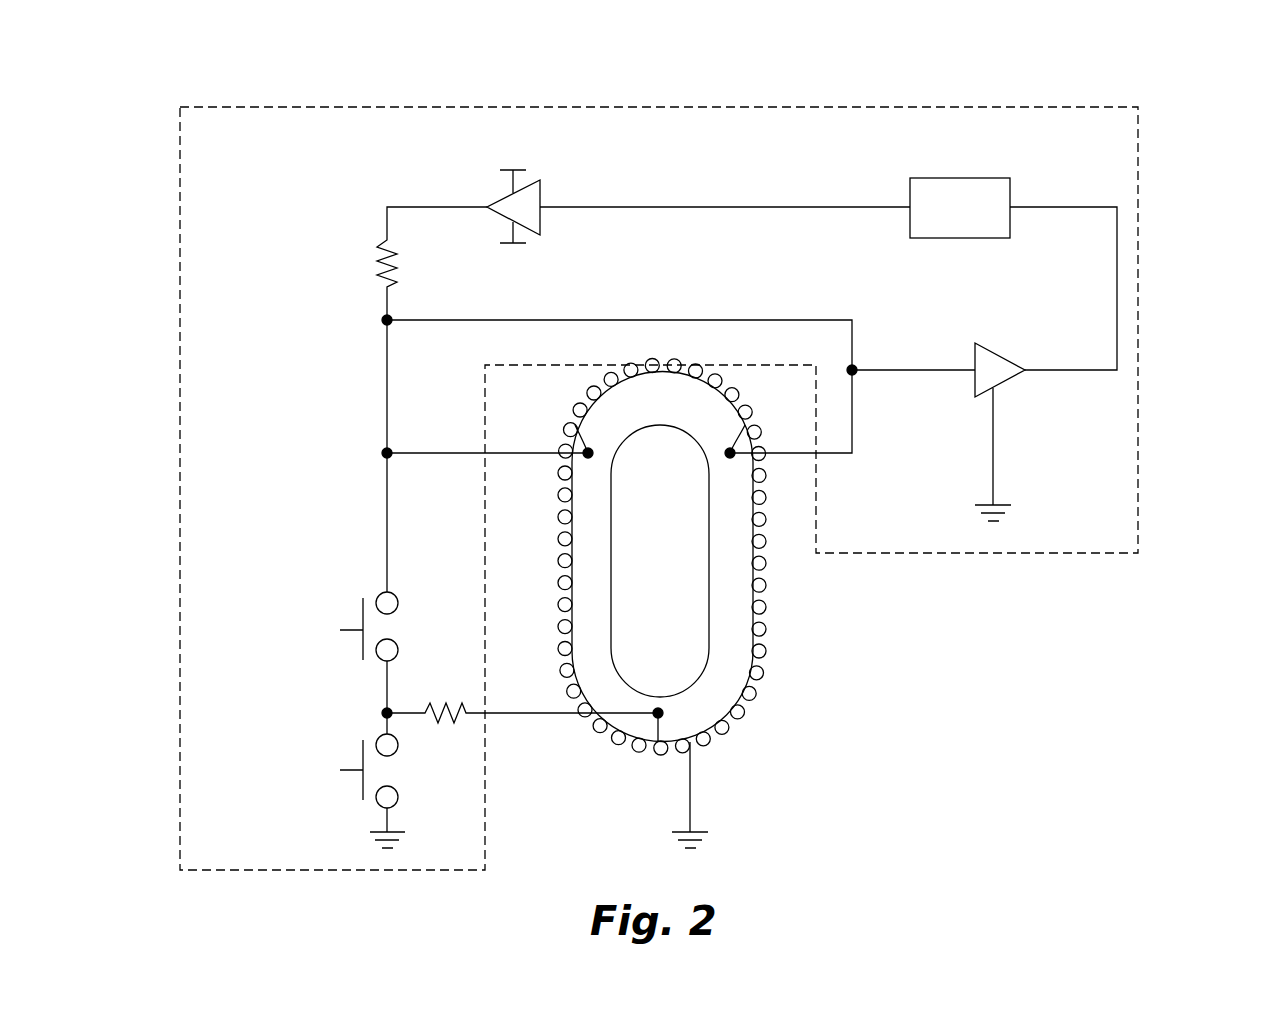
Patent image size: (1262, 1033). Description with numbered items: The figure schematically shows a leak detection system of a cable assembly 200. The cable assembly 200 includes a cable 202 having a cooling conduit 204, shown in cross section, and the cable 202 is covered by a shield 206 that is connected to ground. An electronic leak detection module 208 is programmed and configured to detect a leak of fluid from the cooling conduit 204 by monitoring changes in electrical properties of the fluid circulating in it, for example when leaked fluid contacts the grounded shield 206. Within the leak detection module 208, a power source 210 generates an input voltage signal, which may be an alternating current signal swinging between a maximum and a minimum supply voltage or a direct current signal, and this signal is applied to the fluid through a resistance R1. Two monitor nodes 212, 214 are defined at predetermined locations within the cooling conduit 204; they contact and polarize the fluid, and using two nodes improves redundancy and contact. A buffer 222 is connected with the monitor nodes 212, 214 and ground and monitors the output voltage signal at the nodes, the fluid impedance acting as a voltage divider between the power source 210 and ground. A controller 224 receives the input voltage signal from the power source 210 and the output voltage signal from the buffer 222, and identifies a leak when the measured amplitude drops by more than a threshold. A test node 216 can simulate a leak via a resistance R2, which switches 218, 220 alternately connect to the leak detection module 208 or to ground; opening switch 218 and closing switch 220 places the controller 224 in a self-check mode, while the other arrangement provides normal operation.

The cable assembly 200 is at (1150, 72).
The cable 202 is at (697, 584).
The cooling conduit 204 is at (762, 628).
The shield 206 is at (762, 662).
The leak detection module 208 is at (180, 370).
The power source 210 is at (482, 183).
The monitor node 212 is at (575, 425).
The monitor node 214 is at (745, 425).
The test node 216 is at (658, 742).
The switch 218 is at (320, 602).
The switch 220 is at (305, 755).
The buffer 222 is at (975, 390).
The controller 224 is at (960, 208).
The resistance R1 is at (402, 262).
The resistance R2 is at (444, 701).